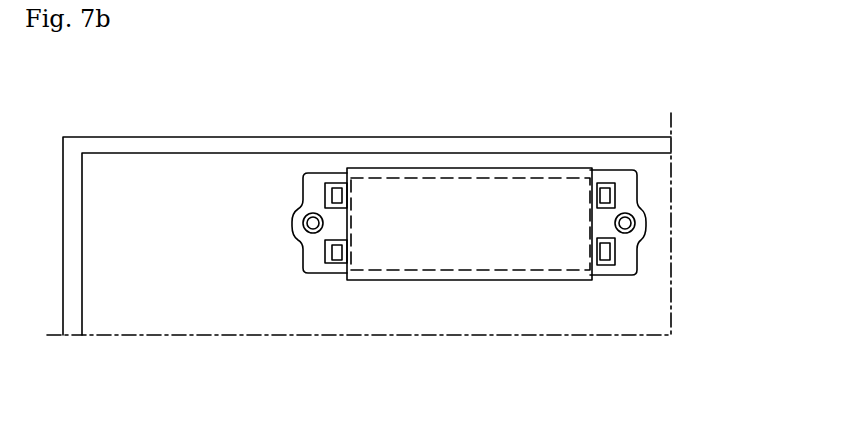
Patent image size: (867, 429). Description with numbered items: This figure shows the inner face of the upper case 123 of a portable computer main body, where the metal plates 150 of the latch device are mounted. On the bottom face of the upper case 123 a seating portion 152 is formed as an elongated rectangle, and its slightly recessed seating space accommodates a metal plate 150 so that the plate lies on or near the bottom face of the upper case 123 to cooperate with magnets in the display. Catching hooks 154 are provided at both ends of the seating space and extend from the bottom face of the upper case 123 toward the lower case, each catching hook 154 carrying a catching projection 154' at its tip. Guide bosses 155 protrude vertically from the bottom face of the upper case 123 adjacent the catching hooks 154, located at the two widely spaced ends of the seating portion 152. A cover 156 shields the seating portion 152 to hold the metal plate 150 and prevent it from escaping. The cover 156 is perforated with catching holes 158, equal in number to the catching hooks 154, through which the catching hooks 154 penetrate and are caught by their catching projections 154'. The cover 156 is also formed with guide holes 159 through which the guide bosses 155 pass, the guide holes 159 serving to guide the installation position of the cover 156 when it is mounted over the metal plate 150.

The upper case 123 is at (522, 135).
The metal plate 150 is at (527, 297).
The seating portion 152 is at (443, 282).
The catching hook 154 is at (534, 183).
The catching projection 154' is at (673, 226).
The guide boss 155 is at (634, 222).
The cover 156 is at (312, 275).
The catching hole 158 is at (338, 263).
The guide hole 159 is at (327, 222).